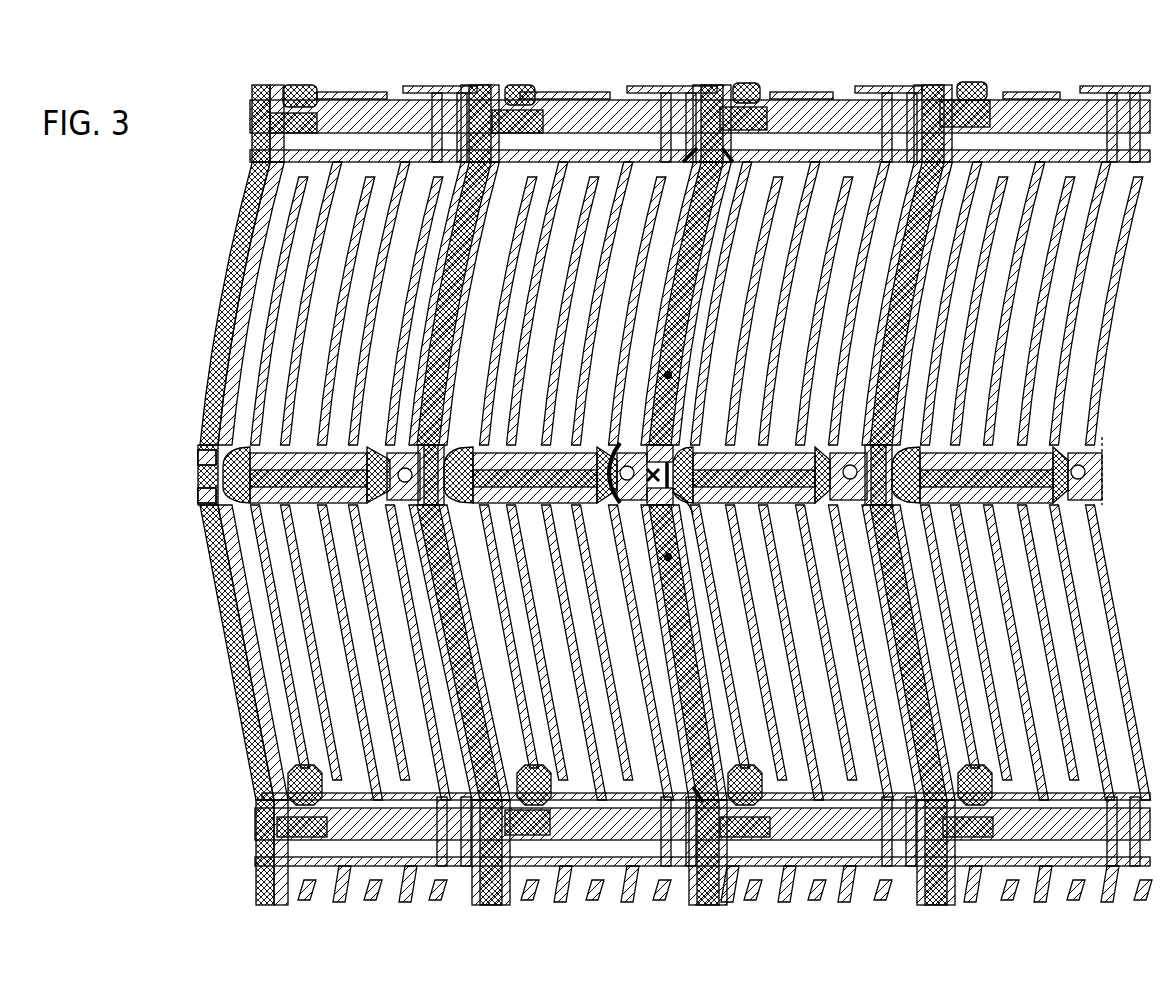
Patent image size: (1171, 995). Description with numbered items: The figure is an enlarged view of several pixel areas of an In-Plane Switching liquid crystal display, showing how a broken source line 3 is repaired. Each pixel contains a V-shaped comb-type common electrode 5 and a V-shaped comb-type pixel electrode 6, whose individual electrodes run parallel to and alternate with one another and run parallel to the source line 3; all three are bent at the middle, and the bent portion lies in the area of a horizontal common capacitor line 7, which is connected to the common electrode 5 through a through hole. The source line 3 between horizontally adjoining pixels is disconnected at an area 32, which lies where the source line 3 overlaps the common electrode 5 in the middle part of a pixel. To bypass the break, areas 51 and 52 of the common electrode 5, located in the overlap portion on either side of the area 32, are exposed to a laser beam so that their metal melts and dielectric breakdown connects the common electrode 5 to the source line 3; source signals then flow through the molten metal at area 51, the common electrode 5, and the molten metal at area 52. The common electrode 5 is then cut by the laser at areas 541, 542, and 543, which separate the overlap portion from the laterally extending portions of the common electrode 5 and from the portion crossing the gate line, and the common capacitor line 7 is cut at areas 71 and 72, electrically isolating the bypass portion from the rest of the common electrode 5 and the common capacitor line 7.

The source line 3 is at (489, 226).
The common electrode 5 is at (504, 172).
The pixel electrode 6 is at (522, 230).
The common capacitor line 7 is at (572, 446).
The area 32 is at (672, 441).
The area of the common electrode 51 is at (671, 375).
The area of the common electrode 52 is at (671, 556).
The area 71 is at (622, 510).
The area 72 is at (698, 512).
The area of the common electrode 541 is at (688, 165).
The area of the common electrode 542 is at (731, 157).
The area of the common electrode 543 is at (694, 788).